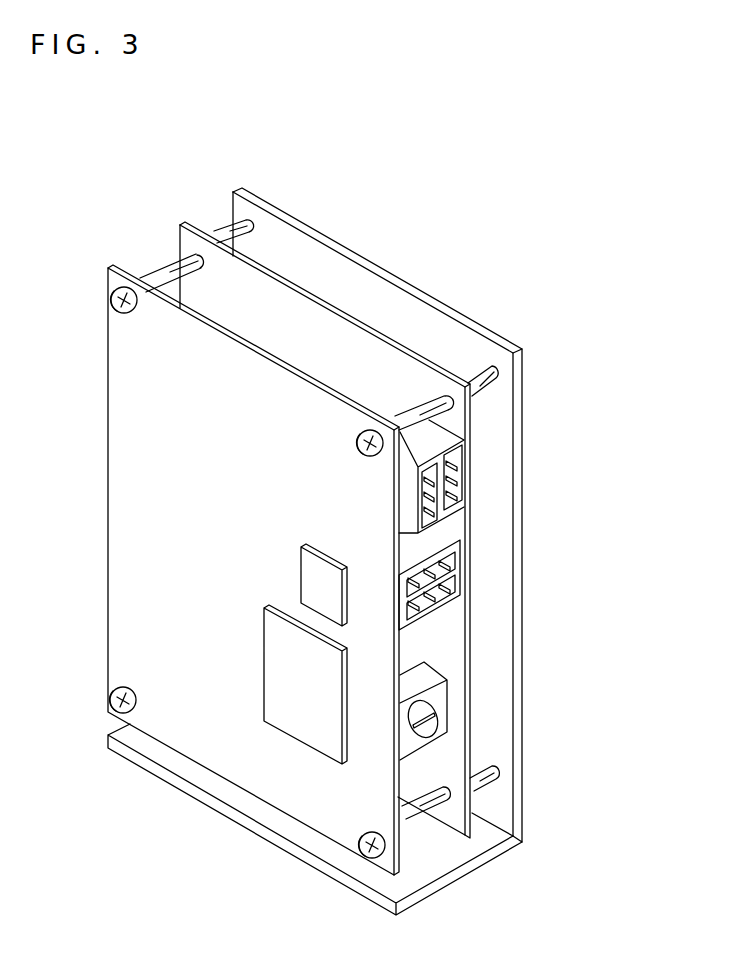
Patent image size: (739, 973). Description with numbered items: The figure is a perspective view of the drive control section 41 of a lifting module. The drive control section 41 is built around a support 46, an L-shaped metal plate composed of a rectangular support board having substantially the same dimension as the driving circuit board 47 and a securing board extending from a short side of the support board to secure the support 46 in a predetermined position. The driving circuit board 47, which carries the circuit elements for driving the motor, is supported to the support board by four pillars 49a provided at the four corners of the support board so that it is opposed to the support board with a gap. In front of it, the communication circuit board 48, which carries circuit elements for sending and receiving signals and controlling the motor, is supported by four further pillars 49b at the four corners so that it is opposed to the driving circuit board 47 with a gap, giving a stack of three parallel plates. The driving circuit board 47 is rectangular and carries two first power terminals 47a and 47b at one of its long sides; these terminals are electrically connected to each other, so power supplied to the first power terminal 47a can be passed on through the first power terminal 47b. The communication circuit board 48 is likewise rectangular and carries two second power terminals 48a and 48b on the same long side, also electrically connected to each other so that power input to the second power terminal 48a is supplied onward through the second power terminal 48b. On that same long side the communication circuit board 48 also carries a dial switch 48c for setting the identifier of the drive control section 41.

The drive control section 41 is at (449, 246).
The support 46 is at (232, 192).
The driving circuit board 47 is at (180, 224).
The communication circuit board 48 is at (108, 267).
The pillars 49a is at (496, 374).
The pillars 49b is at (156, 270).
The first power terminal 47a is at (457, 461).
The first power terminal 47b is at (433, 506).
The second power terminal 48a is at (452, 560).
The second power terminal 48b is at (452, 592).
The dial switch 48c is at (443, 698).